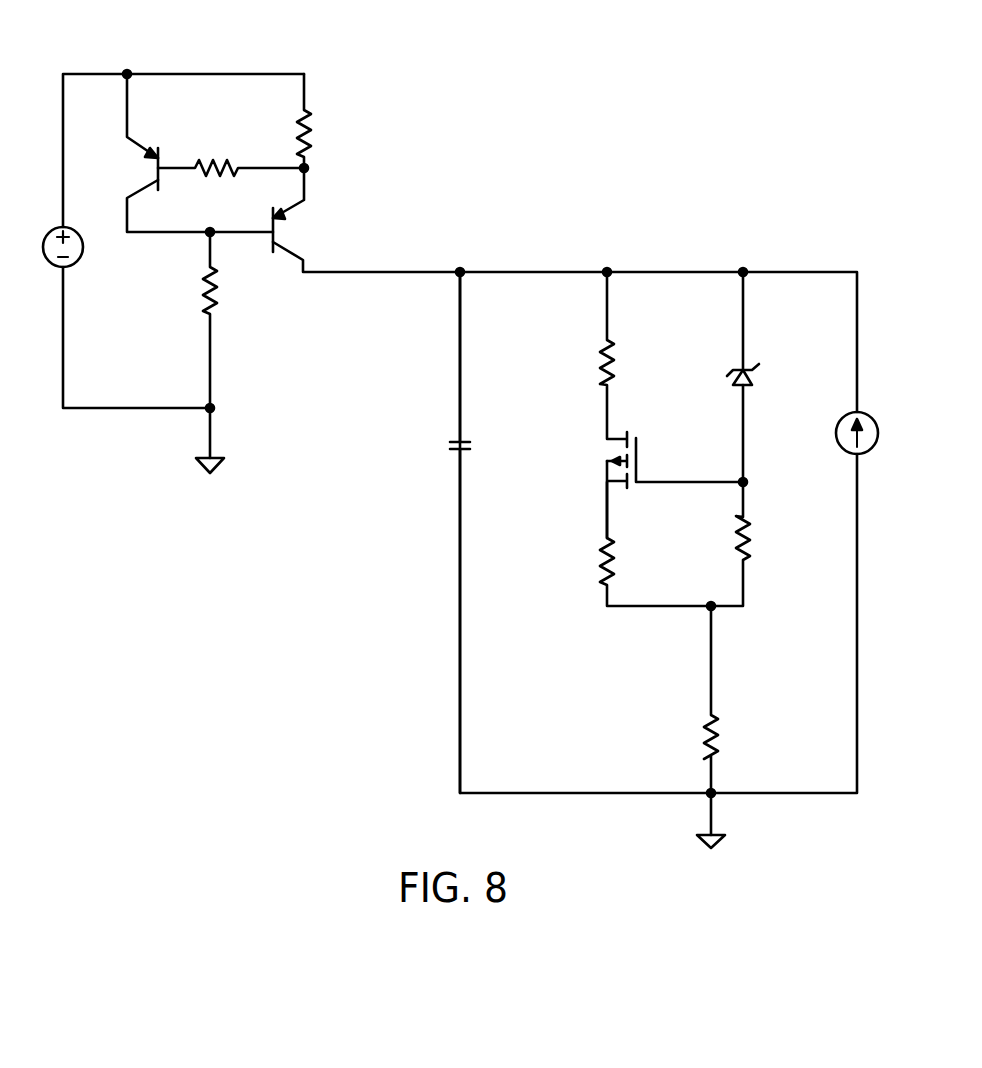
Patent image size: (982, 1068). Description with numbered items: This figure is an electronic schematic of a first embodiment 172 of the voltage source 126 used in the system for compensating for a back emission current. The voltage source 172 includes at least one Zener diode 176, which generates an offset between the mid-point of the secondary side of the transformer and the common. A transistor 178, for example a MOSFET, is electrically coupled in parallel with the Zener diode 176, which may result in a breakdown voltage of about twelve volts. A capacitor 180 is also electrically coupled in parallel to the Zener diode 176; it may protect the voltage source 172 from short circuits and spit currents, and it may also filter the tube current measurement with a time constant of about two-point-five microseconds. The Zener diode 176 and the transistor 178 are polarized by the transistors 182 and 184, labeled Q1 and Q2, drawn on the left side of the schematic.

The voltage source 126 is at (667, 118).
The first embodiment of the voltage source 172 is at (590, 153).
The Zener diode 176 is at (757, 376).
The transistor 178 is at (606, 439).
The capacitor 180 is at (458, 436).
The transistor 182 is at (282, 262).
The transistor 184 is at (160, 162).